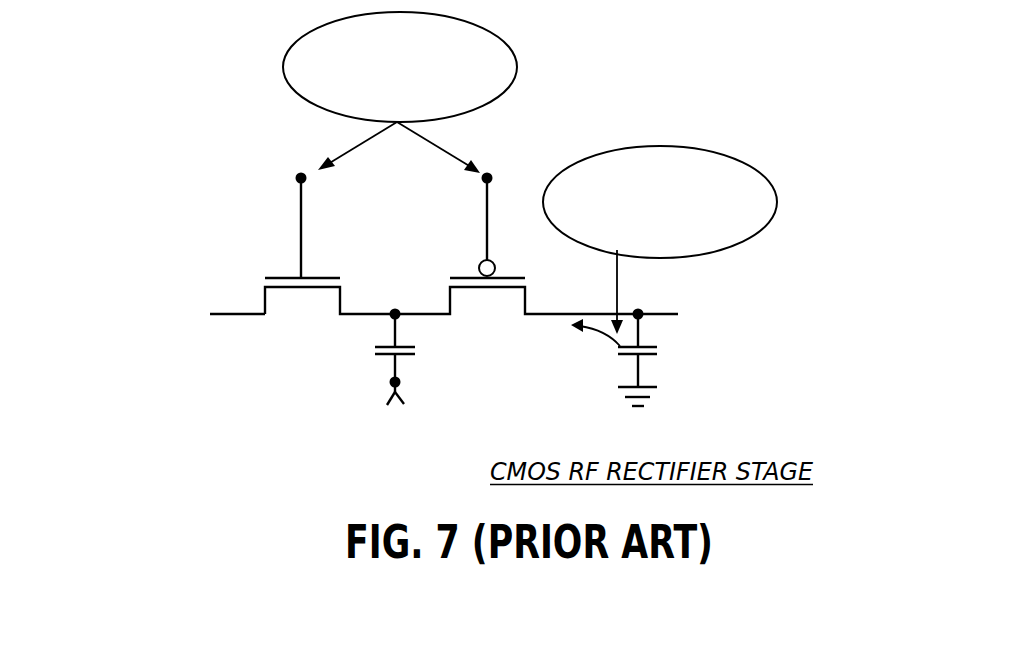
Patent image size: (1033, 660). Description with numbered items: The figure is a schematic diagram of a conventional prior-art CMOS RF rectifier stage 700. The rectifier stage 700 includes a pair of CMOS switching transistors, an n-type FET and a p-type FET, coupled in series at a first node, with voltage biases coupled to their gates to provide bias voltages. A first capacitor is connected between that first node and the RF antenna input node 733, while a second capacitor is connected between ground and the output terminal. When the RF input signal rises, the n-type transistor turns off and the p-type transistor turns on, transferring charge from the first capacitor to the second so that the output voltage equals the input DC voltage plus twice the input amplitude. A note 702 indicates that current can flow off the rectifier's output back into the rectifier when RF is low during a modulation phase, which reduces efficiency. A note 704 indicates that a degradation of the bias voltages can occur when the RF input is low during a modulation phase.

The CMOS RF rectifier stage 700 is at (143, 183).
The backward current flow note 702 is at (672, 180).
The bias voltage degradation note 704 is at (415, 44).
The RF antenna input node 733 is at (391, 382).